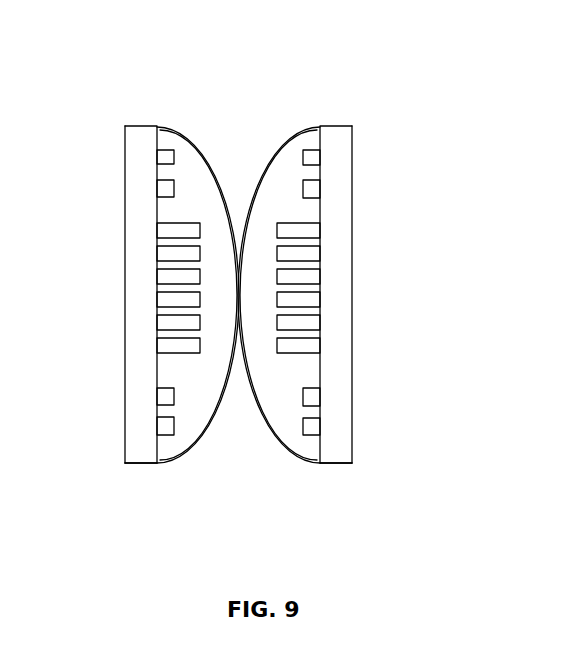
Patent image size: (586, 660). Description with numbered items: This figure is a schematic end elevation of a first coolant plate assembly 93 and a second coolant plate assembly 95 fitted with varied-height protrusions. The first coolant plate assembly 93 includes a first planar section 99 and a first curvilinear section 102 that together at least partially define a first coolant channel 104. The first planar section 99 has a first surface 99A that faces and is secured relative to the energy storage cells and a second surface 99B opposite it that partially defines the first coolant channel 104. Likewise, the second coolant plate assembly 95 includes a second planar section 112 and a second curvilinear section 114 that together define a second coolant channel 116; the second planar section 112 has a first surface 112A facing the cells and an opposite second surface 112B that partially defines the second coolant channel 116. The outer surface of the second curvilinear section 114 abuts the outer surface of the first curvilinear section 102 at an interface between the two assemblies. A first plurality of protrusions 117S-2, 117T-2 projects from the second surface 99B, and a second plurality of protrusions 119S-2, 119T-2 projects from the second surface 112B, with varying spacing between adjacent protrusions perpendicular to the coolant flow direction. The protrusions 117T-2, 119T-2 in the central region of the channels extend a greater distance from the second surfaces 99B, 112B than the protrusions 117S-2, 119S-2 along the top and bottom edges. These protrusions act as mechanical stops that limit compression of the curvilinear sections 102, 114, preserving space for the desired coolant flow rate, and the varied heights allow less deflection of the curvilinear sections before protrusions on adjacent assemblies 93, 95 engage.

The first coolant plate assembly 93 is at (383, 55).
The second coolant plate assembly 95 is at (122, 118).
The first curvilinear section 102 is at (312, 127).
The second planar section 112 is at (130, 335).
The first surface 112A is at (122, 395).
The second surface 112B is at (157, 443).
The first planar section 99 is at (333, 388).
The first surface 99A is at (352, 202).
The second surface 99B is at (320, 443).
The second curvilinear section 114 is at (217, 165).
The second coolant channel 116 is at (190, 180).
The first coolant channel 104 is at (282, 397).
The second plurality of protrusions 119S-2 is at (162, 188).
The second plurality of protrusions 119T-2 is at (167, 232).
The first plurality of protrusions 117S-2 is at (312, 189).
The first plurality of protrusions 117T-2 is at (313, 254).